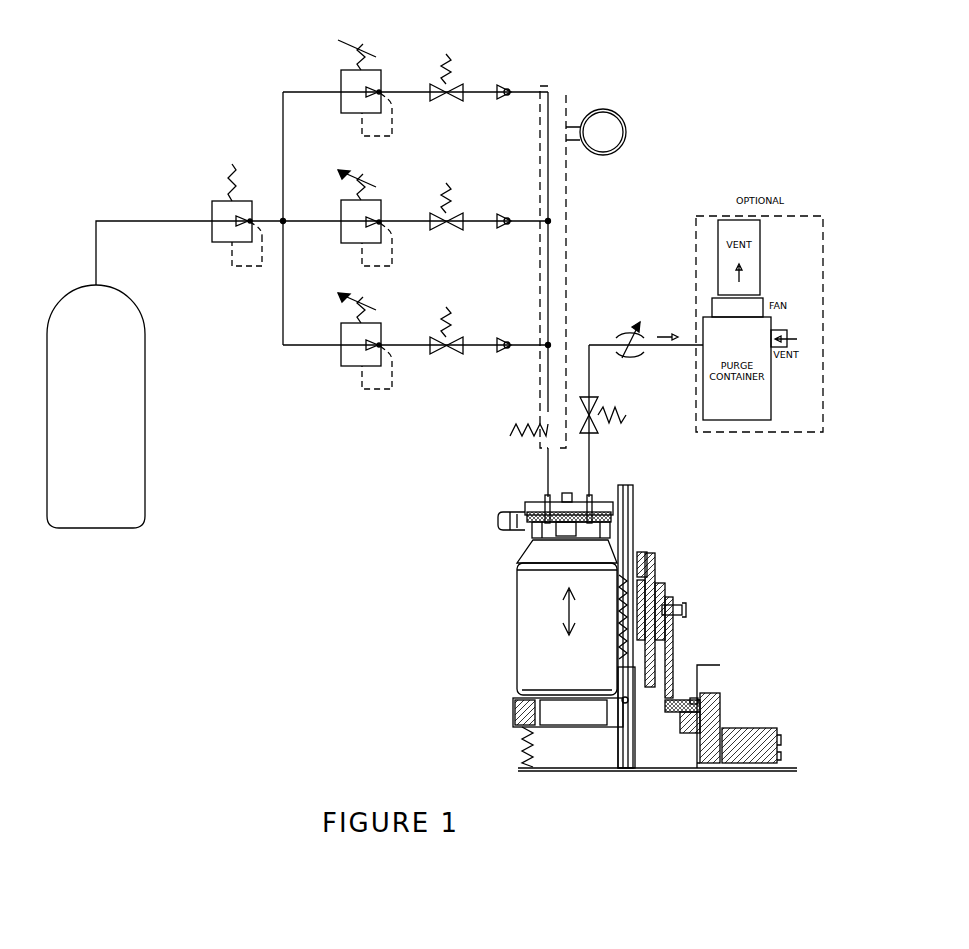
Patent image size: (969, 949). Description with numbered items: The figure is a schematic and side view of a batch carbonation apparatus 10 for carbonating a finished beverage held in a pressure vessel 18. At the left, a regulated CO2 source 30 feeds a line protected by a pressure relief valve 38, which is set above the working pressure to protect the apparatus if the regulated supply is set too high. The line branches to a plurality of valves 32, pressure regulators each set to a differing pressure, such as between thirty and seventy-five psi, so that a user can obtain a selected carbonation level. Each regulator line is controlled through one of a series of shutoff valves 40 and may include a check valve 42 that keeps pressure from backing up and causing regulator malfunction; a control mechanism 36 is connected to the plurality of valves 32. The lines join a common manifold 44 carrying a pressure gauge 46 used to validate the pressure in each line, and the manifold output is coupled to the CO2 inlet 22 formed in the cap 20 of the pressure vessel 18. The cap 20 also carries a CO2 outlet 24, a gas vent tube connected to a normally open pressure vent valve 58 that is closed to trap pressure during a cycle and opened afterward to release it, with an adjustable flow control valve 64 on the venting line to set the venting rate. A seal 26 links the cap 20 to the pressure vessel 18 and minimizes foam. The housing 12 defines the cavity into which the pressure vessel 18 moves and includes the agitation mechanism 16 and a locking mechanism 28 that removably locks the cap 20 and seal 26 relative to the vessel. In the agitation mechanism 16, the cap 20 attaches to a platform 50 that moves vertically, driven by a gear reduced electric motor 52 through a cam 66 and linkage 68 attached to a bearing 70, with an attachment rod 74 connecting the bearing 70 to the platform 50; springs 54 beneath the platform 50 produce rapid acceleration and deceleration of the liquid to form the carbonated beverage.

The batch carbonation apparatus 10 is at (628, 633).
The housing 12 is at (592, 511).
The agitation mechanism 16 is at (652, 700).
The pressure vessel 18 is at (518, 623).
The cap 20 is at (604, 512).
The CO2 inlet 22 is at (532, 505).
The CO2 outlet 24 is at (594, 492).
The seal 26 is at (534, 532).
The locking mechanism 28 is at (496, 520).
The CO2 source 30 is at (150, 392).
The valves 32 is at (338, 73).
The control mechanism 36 is at (568, 84).
The pressure relief valve 38 is at (228, 245).
The shutoff valves 40 is at (466, 82).
The check valve 42 is at (511, 86).
The common manifold 44 is at (570, 98).
The pressure gauge 46 is at (630, 129).
The platform 50 is at (604, 724).
The gear reduced electric motor 52 is at (722, 694).
The springs 54 is at (619, 636).
The pressure vent valve 58 is at (632, 418).
The adjustable flow control valve 64 is at (606, 332).
The cam 66 is at (692, 696).
The linkage 68 is at (678, 655).
The bearing 70 is at (660, 600).
The attachment rod 74 is at (655, 578).